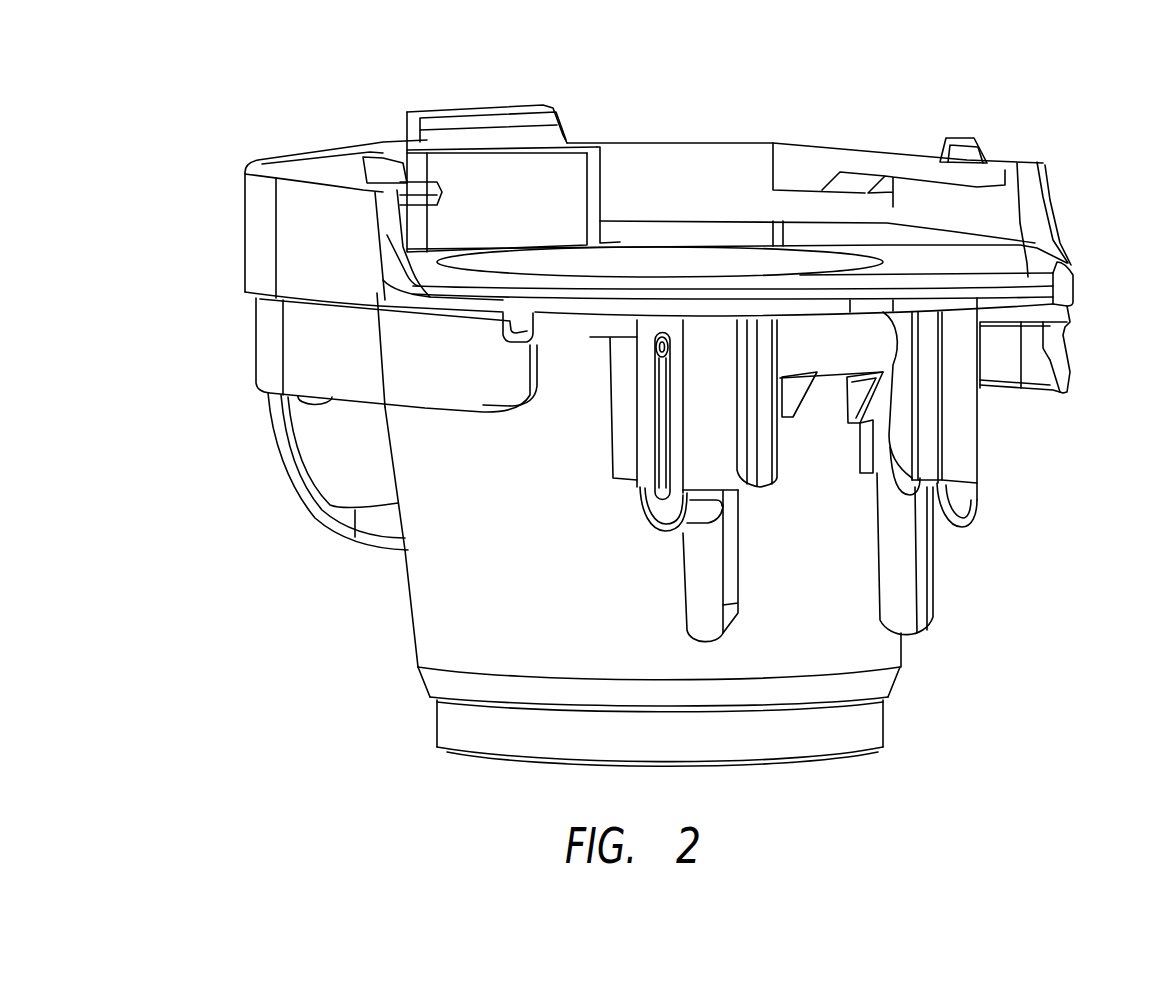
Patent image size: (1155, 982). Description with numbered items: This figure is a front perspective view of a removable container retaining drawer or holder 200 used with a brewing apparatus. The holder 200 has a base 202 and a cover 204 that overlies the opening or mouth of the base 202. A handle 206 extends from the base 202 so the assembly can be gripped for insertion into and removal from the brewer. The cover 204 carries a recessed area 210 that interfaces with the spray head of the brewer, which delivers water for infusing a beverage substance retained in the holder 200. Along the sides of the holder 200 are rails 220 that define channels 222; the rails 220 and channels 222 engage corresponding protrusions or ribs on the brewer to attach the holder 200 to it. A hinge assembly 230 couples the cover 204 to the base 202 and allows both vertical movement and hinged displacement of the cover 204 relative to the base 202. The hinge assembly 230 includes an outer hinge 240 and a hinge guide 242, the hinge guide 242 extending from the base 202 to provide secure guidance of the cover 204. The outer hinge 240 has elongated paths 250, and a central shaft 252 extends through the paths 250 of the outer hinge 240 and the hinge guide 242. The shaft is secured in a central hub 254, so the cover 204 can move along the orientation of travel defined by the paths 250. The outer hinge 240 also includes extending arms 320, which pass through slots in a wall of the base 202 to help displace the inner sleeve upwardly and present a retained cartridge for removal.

The holder 200 is at (205, 113).
The base 202 is at (440, 615).
The cover 204 is at (905, 268).
The handle 206 is at (274, 460).
The recessed area 210 is at (723, 262).
The rail 220 is at (855, 160).
The channel 222 is at (993, 213).
The hinge assembly 230 is at (955, 614).
The outer hinge 240 is at (653, 513).
The hinge guide 242 is at (737, 510).
The elongated path 250 is at (663, 447).
The central shaft 252 is at (656, 347).
The central hub 254 is at (873, 349).
The extending arm 320 is at (700, 620).